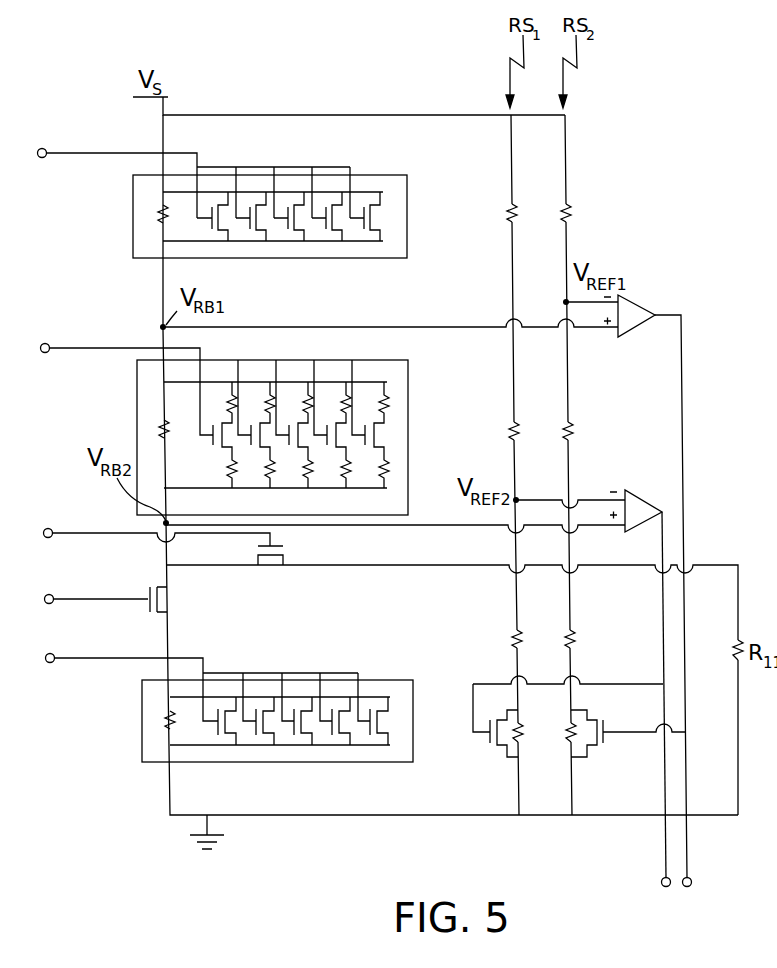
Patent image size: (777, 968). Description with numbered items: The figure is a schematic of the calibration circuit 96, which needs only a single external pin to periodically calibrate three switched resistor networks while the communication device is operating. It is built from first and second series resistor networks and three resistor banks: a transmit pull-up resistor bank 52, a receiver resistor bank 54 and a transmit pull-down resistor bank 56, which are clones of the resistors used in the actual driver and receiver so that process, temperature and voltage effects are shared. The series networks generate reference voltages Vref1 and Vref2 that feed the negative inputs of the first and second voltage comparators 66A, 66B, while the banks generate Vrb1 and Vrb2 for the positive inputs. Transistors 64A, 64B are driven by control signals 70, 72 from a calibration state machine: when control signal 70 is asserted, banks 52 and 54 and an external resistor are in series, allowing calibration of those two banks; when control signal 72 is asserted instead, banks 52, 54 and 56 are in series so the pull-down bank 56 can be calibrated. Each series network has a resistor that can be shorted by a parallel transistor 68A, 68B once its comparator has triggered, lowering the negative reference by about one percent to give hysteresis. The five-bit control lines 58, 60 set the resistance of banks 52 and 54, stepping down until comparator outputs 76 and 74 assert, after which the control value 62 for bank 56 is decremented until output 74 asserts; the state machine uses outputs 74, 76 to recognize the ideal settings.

The pull-up resistor bank 52 is at (395, 181).
The receiver resistor bank 54 is at (408, 366).
The pull-down resistor bank 56 is at (398, 685).
The control line 58 is at (87, 152).
The control line 60 is at (88, 347).
The control value 62 is at (94, 657).
The transistor 64A is at (282, 573).
The transistor 64B is at (186, 602).
The first voltage comparator 66A is at (646, 305).
The second voltage comparator 66B is at (650, 500).
The parallel transistor 68A is at (490, 737).
The parallel transistor 68B is at (628, 750).
The control signal 70 is at (92, 532).
The control signal 72 is at (94, 598).
The comparator output 74 is at (664, 863).
The comparator output 76 is at (689, 863).
The calibration circuit 96 is at (650, 93).